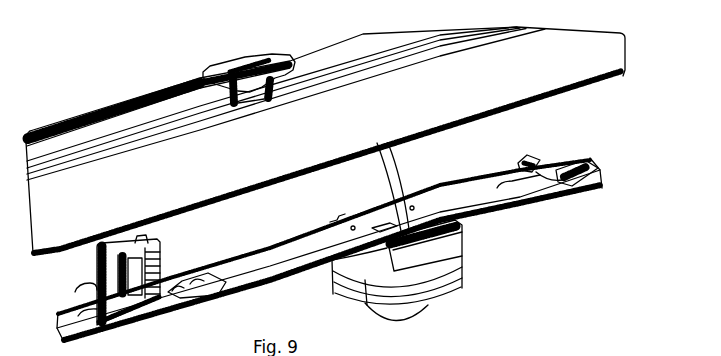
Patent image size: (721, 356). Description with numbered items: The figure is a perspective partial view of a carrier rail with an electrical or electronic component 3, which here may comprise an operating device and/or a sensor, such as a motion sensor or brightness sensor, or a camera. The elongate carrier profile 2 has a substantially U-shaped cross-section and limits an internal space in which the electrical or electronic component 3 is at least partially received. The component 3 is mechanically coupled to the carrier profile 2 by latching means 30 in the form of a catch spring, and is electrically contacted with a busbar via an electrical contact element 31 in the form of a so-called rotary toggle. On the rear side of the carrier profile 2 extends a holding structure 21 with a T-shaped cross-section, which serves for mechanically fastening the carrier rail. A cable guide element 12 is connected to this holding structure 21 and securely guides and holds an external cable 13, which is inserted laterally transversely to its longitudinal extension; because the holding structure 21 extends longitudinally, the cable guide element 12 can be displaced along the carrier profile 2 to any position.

The carrier profile 2 is at (325, 126).
The electrical or electronic component 3 is at (568, 163).
The cable guide element 12 is at (213, 72).
The cable 13 is at (155, 88).
The holding structure 21 is at (107, 128).
The latching means 30 is at (530, 153).
The electrical contact element 31 is at (95, 277).